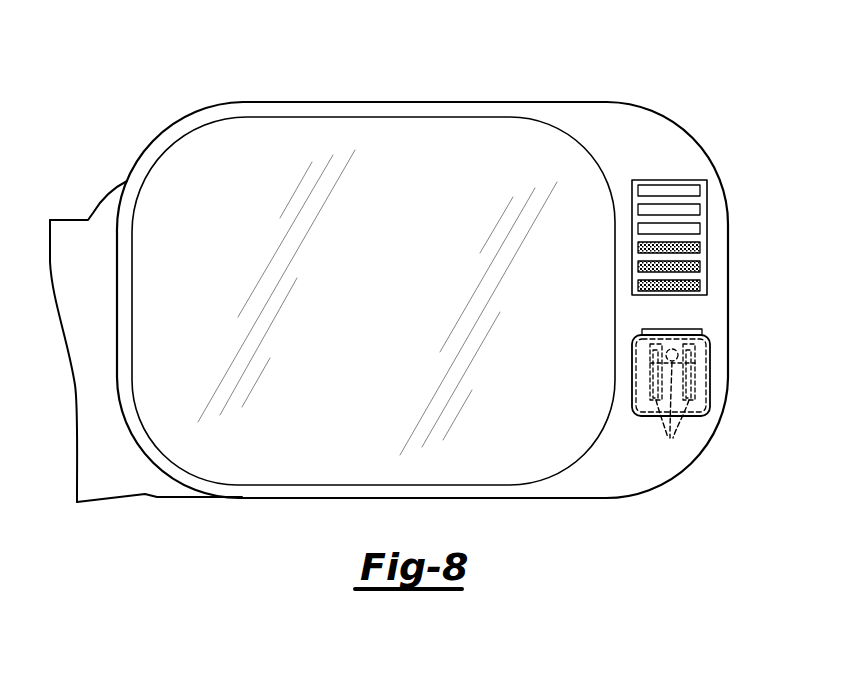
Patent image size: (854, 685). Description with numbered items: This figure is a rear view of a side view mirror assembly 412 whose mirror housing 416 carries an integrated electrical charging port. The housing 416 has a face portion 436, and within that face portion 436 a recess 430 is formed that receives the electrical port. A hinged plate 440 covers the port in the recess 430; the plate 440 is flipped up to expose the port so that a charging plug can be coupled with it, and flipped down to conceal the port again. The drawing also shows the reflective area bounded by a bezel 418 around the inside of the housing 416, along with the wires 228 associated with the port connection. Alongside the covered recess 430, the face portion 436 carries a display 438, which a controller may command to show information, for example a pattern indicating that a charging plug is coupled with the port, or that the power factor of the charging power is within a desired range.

The side view mirror assembly 412 is at (353, 65).
The mirror housing 416 is at (135, 163).
The bezel 418 is at (183, 133).
The face portion 436 is at (638, 127).
The display 438 is at (707, 233).
The hinged plate 440 is at (712, 378).
The recess 430 is at (712, 355).
The wires 228 is at (672, 414).